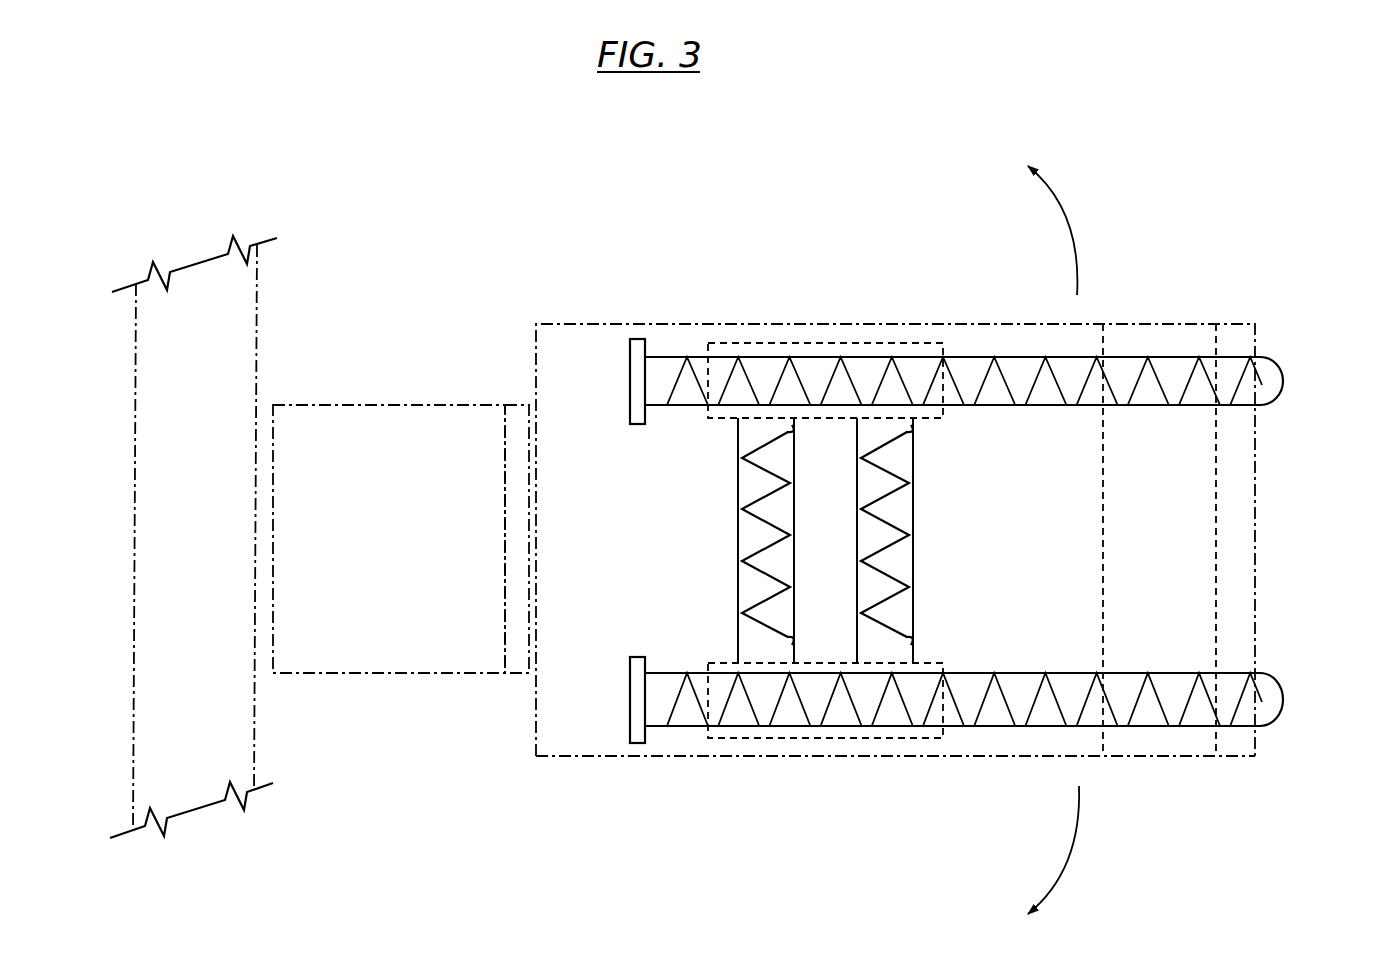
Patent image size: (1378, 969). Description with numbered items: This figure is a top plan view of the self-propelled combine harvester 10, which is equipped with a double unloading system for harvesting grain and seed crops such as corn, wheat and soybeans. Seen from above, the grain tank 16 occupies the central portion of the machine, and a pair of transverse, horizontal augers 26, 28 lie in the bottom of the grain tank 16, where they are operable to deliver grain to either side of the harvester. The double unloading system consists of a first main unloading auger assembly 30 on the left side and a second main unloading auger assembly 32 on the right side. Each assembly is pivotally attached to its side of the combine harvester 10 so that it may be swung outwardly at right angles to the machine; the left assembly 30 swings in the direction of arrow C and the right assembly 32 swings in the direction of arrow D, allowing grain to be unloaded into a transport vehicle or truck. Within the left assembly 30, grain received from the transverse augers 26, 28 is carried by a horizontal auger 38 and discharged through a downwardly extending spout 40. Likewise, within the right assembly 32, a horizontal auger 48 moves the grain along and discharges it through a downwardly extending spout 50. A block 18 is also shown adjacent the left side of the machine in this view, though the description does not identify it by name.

The combine harvester 10 is at (445, 247).
The grain tank 16 is at (1021, 479).
The mounting block 18 is at (387, 405).
The transverse auger 26 is at (760, 524).
The transverse auger 28 is at (885, 548).
The first main unloading auger assembly 30 is at (628, 782).
The second main unloading auger assembly 32 is at (630, 300).
The horizontal auger 38 is at (905, 706).
The spout 40 is at (1280, 724).
The horizontal auger 48 is at (925, 375).
The spout 50 is at (1279, 358).